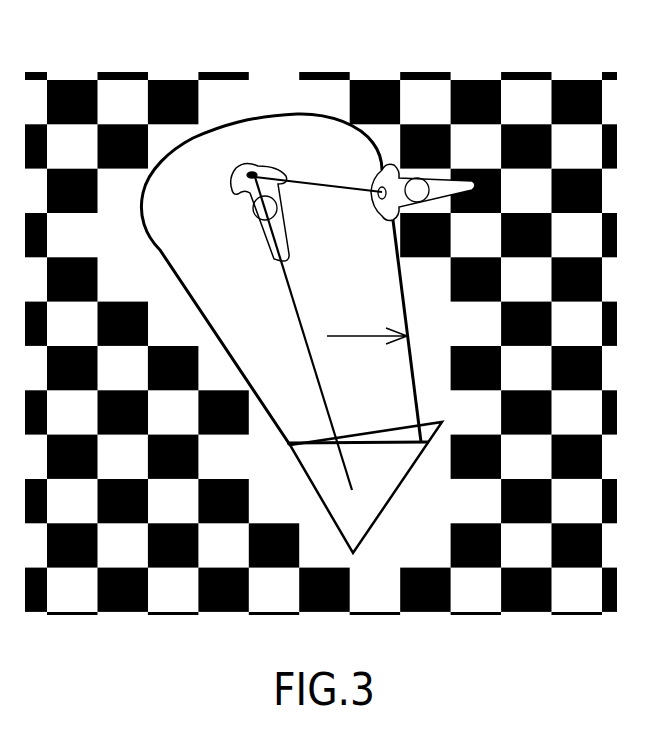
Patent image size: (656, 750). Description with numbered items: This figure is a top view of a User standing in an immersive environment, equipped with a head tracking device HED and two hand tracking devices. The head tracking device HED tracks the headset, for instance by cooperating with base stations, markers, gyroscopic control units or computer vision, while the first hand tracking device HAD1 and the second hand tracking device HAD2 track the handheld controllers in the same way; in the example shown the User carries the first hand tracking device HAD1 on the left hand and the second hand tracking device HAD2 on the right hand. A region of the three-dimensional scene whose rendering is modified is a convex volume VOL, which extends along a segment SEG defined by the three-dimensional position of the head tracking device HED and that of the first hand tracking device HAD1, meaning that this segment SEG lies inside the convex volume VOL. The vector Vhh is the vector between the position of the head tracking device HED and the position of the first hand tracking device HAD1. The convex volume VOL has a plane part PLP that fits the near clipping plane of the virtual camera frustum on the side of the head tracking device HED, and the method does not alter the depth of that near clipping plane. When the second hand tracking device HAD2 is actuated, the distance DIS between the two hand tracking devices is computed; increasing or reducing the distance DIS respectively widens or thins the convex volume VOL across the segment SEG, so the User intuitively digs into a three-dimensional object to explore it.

The convex volume VOL is at (287, 150).
The first hand tracking device HAD1 is at (235, 208).
The second hand tracking device HAD2 is at (403, 201).
The distance DIS is at (318, 197).
The segment SEG is at (303, 333).
The vector Vhh is at (367, 356).
The plane part PLP is at (358, 431).
The head tracking device HED is at (366, 487).
The user User is at (351, 468).